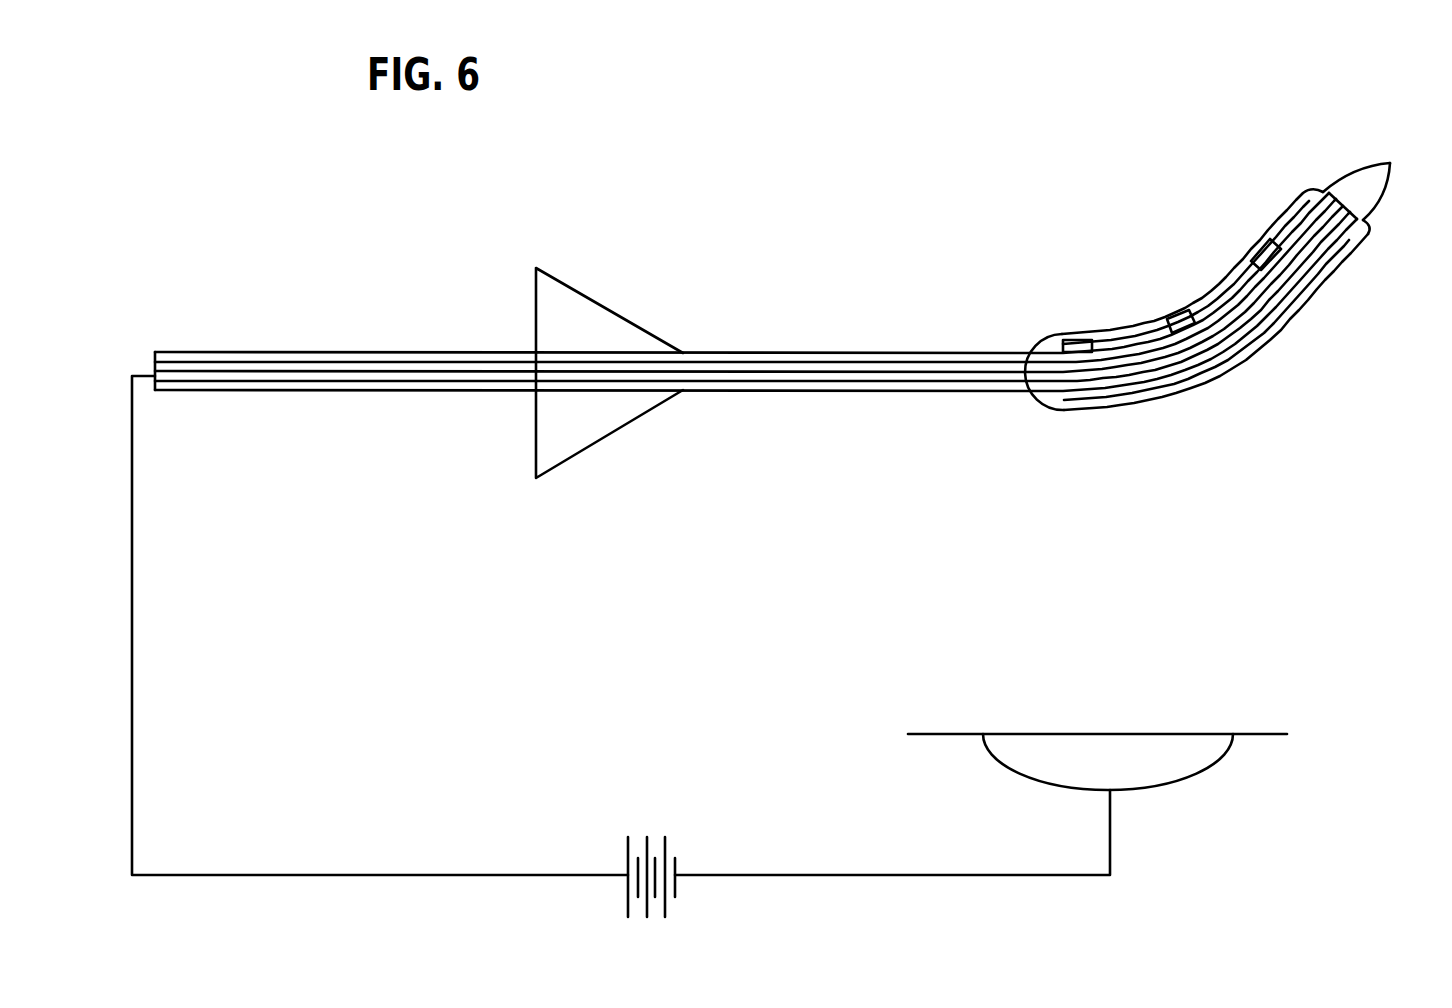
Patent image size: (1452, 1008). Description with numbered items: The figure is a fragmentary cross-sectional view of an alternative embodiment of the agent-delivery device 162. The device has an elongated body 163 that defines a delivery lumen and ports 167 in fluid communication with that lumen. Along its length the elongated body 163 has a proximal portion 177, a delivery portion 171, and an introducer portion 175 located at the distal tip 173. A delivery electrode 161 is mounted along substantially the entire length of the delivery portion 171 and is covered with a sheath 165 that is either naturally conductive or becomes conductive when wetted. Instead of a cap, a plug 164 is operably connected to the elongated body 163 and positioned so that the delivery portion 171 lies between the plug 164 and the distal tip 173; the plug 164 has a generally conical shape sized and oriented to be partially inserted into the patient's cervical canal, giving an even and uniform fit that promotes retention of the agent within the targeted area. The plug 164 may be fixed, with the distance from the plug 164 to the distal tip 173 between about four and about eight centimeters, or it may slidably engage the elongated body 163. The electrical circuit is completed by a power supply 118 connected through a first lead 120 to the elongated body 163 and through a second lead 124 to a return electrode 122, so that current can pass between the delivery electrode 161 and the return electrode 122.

The agent-delivery device 162 is at (718, 128).
The elongated body 163 is at (373, 392).
The proximal portion 177 is at (342, 351).
The delivery electrode 161 is at (1168, 382).
The delivery portion 171 is at (1125, 410).
The sheath 165 is at (200, 377).
The ports 167 is at (1080, 345).
The distal tip 173 is at (1390, 163).
The introducer portion 175 is at (1378, 200).
The plug 164 is at (614, 432).
The first lead 120 is at (143, 596).
The power supply 118 is at (648, 843).
The second lead 124 is at (824, 875).
The return electrode 122 is at (1182, 768).